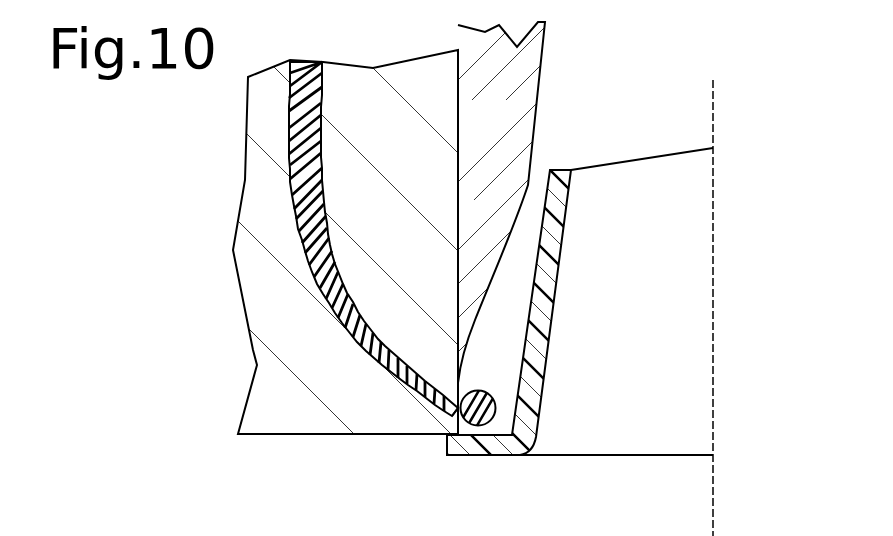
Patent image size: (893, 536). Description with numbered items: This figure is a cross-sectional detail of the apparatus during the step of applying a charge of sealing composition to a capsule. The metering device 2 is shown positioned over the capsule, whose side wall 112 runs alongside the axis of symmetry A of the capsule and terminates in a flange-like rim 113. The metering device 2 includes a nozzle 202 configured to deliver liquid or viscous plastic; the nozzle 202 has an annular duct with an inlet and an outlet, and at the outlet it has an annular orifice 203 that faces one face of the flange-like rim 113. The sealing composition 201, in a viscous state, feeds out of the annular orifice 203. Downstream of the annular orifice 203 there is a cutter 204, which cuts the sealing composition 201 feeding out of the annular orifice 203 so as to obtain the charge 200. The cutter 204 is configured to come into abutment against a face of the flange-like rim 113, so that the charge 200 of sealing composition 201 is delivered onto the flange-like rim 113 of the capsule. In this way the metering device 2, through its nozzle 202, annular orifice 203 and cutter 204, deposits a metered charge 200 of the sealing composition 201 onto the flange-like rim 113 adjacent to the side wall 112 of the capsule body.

The metering device 2 is at (180, 220).
The charge 200 is at (478, 407).
The sealing composition 201 is at (330, 277).
The nozzle 202 is at (292, 327).
The annular orifice 203 is at (460, 418).
The cutter 204 is at (477, 242).
The side wall 112 is at (540, 315).
The flange-like rim 113 is at (515, 462).
The axis of symmetry A is at (713, 118).